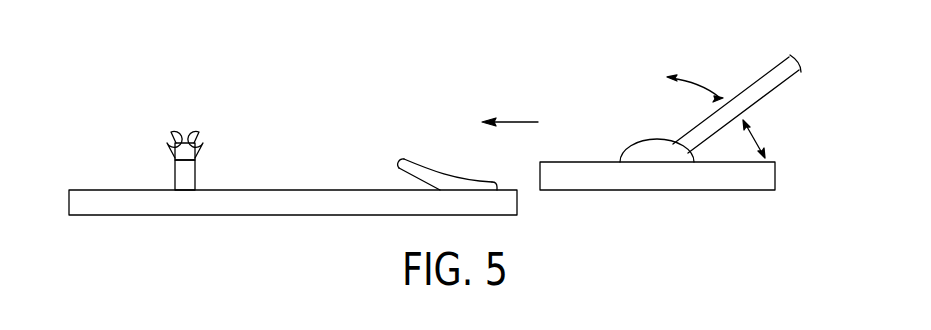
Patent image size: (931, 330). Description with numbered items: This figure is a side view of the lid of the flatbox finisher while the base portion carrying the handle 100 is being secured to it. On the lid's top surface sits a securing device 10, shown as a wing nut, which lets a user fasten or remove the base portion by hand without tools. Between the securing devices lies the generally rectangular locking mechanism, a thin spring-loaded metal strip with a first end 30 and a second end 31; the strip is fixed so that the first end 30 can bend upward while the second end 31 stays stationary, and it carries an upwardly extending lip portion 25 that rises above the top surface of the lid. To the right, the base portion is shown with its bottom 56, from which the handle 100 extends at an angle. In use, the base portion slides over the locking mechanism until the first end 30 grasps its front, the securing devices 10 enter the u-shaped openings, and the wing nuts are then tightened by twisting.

The securing device 10 is at (162, 138).
The upwardly extending lip portion 25 is at (420, 158).
The first end 30 is at (400, 163).
The second end 31 is at (486, 180).
The bottom 56 is at (657, 190).
The handle 100 is at (763, 77).